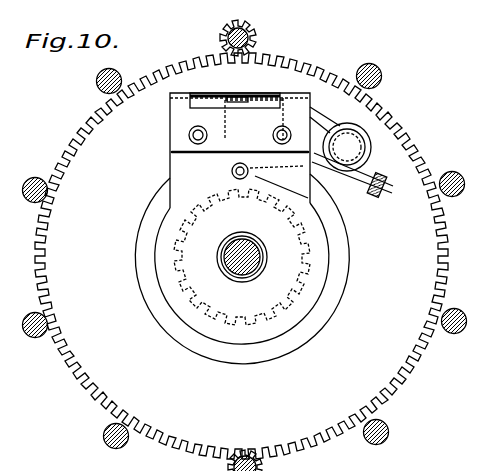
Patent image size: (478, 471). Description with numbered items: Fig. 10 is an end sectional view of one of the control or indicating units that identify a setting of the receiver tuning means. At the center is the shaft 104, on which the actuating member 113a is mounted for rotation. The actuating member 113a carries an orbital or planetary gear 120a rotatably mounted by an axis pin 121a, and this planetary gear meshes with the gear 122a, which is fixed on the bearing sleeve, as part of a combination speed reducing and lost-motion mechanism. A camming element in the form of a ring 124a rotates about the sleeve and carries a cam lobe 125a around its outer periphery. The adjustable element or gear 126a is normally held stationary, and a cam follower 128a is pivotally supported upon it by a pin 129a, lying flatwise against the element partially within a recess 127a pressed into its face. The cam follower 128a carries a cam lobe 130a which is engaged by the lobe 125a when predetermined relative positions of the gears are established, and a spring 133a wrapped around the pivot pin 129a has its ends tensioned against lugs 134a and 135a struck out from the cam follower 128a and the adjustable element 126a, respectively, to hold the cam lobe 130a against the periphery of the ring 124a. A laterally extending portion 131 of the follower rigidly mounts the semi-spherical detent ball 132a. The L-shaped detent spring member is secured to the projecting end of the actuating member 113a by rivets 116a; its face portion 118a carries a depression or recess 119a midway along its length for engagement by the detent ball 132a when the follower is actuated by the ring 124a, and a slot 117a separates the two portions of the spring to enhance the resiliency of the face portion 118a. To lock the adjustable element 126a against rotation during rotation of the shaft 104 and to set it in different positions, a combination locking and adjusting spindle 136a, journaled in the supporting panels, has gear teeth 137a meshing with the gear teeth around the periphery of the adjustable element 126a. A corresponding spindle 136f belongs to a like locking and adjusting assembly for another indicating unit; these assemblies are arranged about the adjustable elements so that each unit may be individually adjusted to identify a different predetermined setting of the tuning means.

The shaft 104 is at (232, 259).
The actuating member 113a is at (182, 305).
The rivets 116a is at (190, 137).
The slot 117a is at (197, 105).
The face portion 118a is at (272, 100).
The depression or recess 119a is at (236, 97).
The orbital or planetary gear 120a is at (232, 171).
The axis pin 121a is at (233, 177).
The gear 122a is at (183, 229).
The cam ring 124a is at (188, 336).
The cam lobe 125a is at (262, 180).
The adjustable element 126a is at (408, 374).
The recess 127a is at (406, 147).
The cam follower 128a is at (370, 182).
The pivot pin 129a is at (371, 152).
The cam lobe 130a is at (276, 112).
The laterally extending portion 131 is at (170, 468).
The detent ball 132a is at (248, 92).
The spring 133a is at (350, 148).
The lug 134a is at (332, 113).
The lug 135a is at (384, 196).
The combination locking and adjusting spindle 136a is at (220, 36).
The spindle 136f is at (248, 452).
The gear teeth 137a is at (257, 31).